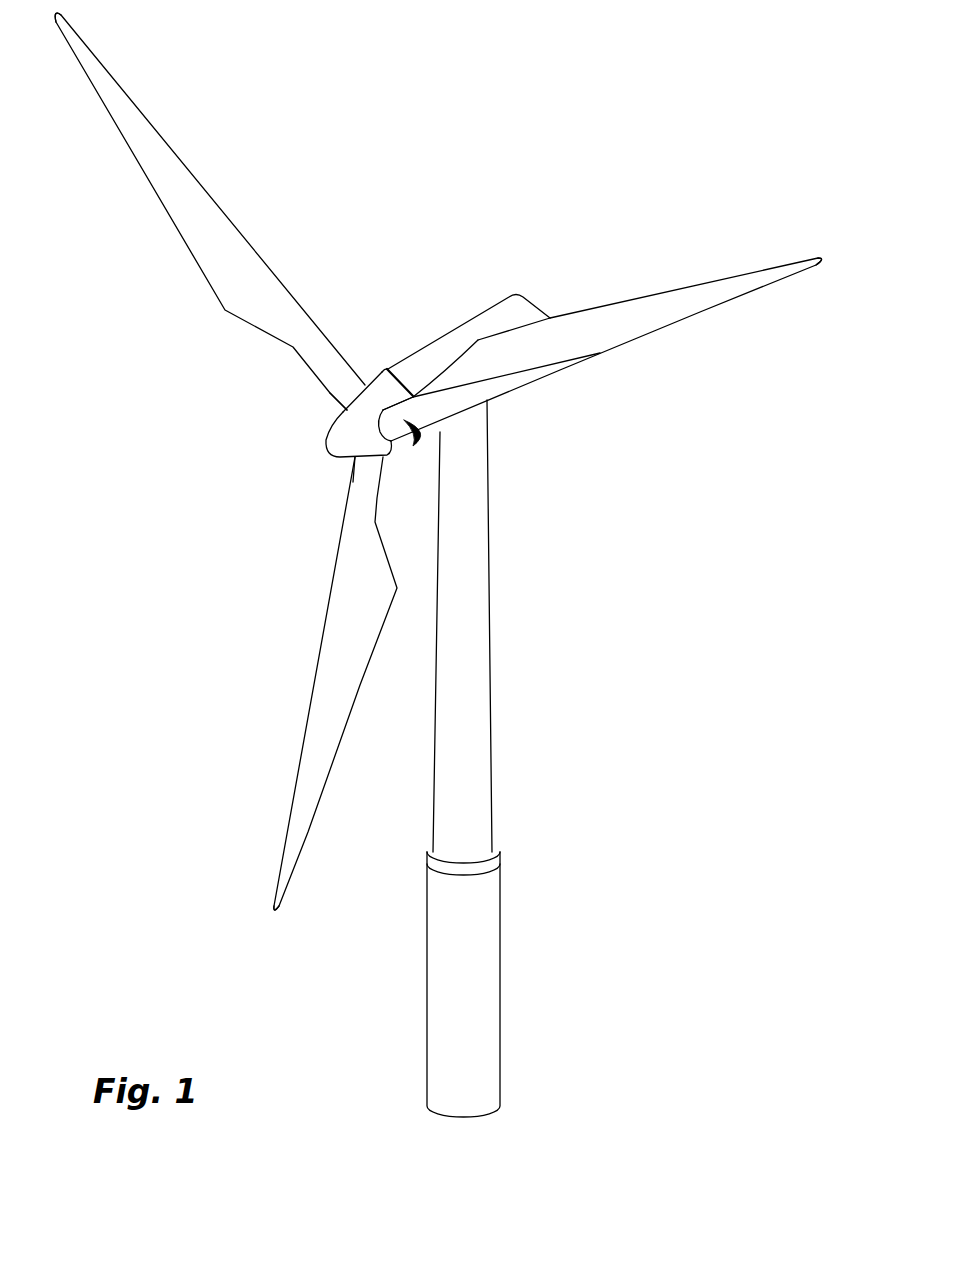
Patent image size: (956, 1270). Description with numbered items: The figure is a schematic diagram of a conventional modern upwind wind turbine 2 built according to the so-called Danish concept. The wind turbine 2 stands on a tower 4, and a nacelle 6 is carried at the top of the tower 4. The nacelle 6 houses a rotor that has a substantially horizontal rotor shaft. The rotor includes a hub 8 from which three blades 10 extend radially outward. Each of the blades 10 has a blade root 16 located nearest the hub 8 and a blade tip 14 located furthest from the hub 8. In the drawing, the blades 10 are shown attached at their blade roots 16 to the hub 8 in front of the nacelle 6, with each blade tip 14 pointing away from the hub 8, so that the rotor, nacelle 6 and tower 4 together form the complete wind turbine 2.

The wind turbine 2 is at (580, 704).
The tower 4 is at (480, 632).
The nacelle 6 is at (430, 353).
The hub 8 is at (330, 432).
The blades 10 is at (241, 292).
The blade tip 14 is at (100, 68).
The blade root 16 is at (347, 398).